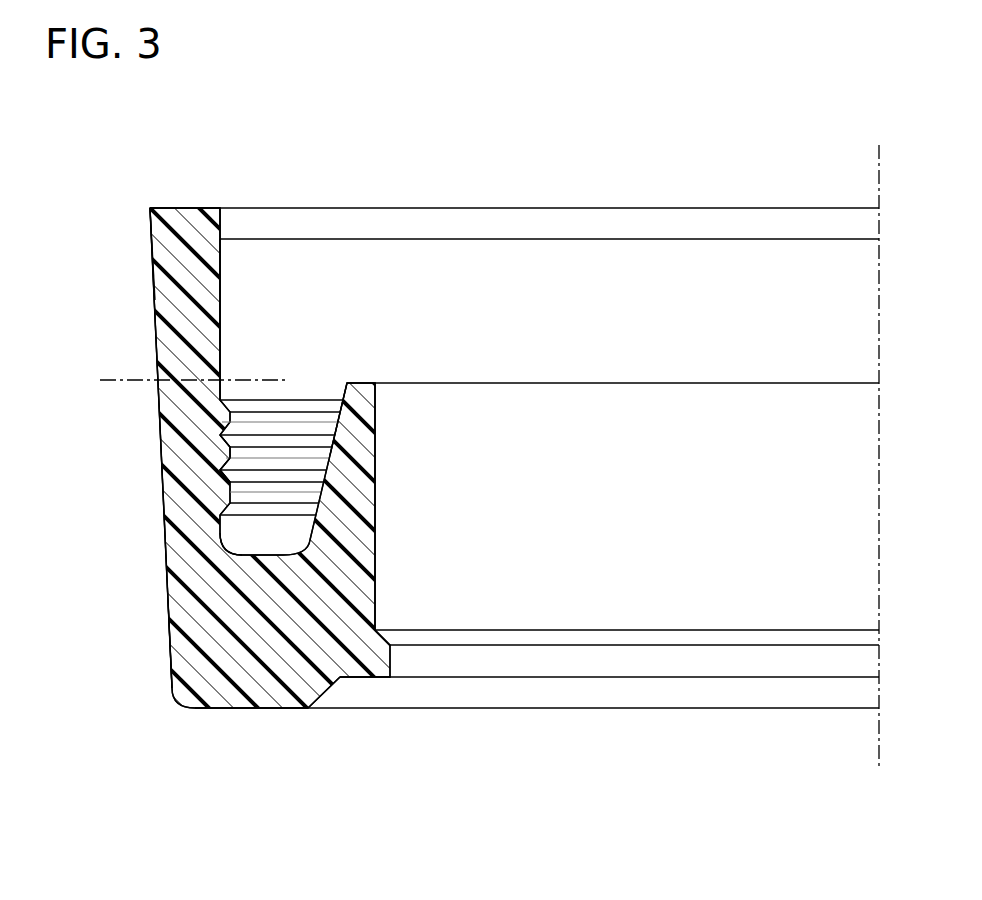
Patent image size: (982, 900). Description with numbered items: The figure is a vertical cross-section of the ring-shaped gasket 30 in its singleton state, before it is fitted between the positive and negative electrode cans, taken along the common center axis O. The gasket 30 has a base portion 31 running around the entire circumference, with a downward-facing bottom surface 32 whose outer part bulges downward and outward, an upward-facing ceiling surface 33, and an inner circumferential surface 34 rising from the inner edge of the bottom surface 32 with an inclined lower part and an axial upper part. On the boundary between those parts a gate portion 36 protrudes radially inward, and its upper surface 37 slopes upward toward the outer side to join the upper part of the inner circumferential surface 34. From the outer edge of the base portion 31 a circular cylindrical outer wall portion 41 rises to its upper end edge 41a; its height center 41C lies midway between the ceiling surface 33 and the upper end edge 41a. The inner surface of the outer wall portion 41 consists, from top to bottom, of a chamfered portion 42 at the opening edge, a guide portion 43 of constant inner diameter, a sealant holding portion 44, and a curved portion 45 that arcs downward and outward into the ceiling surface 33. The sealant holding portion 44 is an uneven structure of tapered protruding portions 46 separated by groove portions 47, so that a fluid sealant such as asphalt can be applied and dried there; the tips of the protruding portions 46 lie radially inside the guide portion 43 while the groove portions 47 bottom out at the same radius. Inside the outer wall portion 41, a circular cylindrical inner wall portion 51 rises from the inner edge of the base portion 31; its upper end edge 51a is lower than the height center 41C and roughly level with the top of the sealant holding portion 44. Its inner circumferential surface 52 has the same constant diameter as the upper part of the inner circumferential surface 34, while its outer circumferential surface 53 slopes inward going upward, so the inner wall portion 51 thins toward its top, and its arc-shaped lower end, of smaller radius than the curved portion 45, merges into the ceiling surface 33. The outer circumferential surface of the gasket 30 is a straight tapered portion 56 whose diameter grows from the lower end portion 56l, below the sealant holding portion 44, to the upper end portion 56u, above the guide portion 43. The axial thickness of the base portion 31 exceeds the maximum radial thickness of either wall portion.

The gasket 30 is at (625, 208).
The axis O is at (877, 180).
The base portion 31 is at (270, 683).
The bottom surface 32 is at (227, 708).
The ceiling surface 33 is at (283, 549).
The inner circumferential surface 34 is at (327, 673).
The gate portion 36 is at (398, 668).
The upper surface 37 is at (380, 631).
The outer wall portion 41 is at (168, 347).
The upper end edge 41a is at (176, 208).
The height center 41C is at (244, 379).
The chamfered portion 42 is at (210, 220).
The guide portion 43 is at (220, 300).
The sealant holding portion 44 is at (90, 455).
The curved portion 45 is at (232, 553).
The protruding portions 46 is at (258, 441).
The groove portions 47 is at (250, 452).
The inner wall portion 51 is at (365, 465).
The upper end edge 51a is at (370, 382).
The inner circumferential surface 52 is at (376, 498).
The outer circumferential surface 53 is at (336, 437).
The tapered portion 56 is at (162, 408).
The upper end portion 56u is at (148, 207).
The lower end portion 56l is at (174, 691).